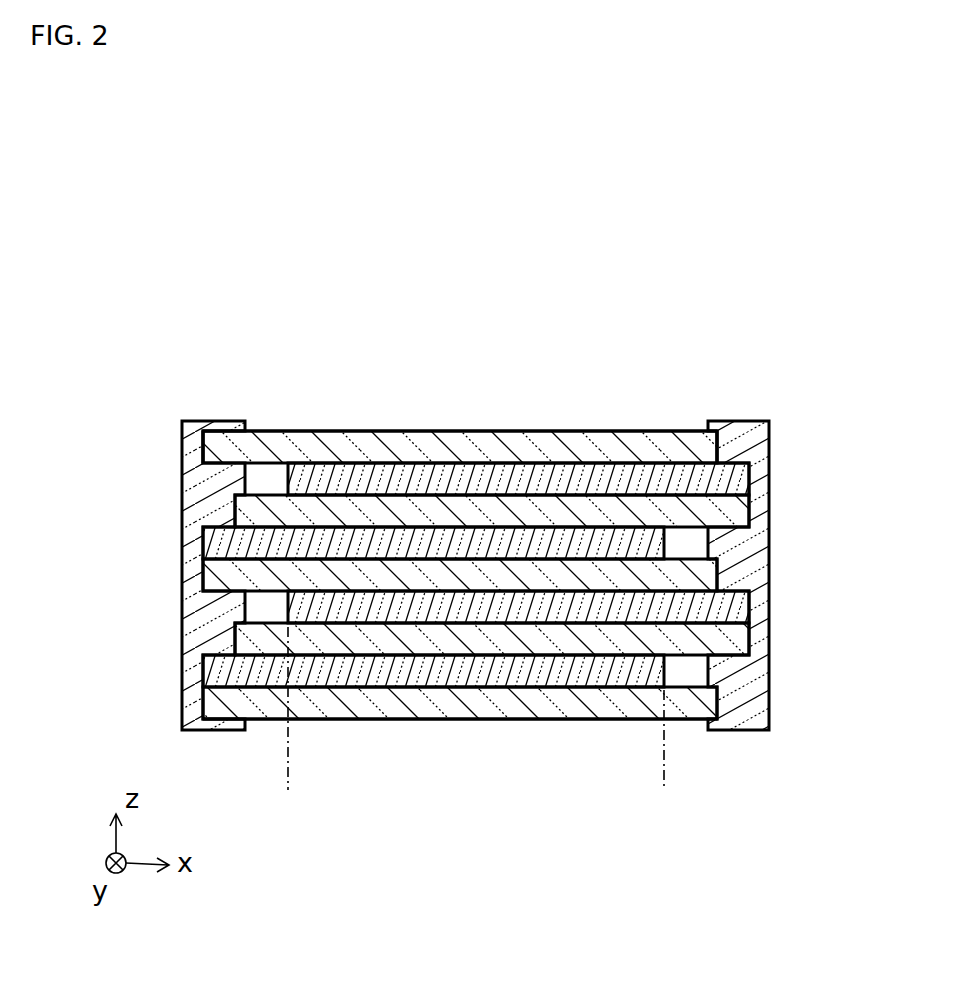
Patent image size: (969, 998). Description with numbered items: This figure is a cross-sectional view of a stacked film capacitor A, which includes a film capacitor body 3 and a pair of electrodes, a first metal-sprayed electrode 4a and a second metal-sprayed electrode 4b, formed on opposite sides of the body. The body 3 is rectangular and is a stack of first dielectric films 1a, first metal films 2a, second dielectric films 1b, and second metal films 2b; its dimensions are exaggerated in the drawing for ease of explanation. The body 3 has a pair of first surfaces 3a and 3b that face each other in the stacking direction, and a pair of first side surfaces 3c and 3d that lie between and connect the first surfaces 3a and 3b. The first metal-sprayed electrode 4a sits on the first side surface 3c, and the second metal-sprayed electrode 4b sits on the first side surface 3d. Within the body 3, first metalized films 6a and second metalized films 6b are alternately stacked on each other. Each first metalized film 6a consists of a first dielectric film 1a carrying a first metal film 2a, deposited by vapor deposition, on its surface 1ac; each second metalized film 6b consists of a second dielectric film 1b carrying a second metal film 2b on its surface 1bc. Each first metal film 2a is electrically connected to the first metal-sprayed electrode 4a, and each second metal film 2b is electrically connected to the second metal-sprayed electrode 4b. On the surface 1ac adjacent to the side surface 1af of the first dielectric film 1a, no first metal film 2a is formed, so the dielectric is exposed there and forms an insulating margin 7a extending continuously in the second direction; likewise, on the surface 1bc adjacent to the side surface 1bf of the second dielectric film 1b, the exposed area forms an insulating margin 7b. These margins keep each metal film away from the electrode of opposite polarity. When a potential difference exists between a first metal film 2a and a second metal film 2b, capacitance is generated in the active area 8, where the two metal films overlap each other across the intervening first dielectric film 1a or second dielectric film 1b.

The stacked film capacitor A is at (717, 216).
The film capacitor body 3 is at (476, 460).
The first surface 3a is at (294, 416).
The first surface 3b is at (684, 738).
The first side surface 3c is at (214, 385).
The first side surface 3d is at (755, 386).
The first metalized film 6a is at (460, 492).
The second metalized film 6b is at (492, 460).
The first dielectric film 1a is at (445, 692).
The second dielectric film 1b is at (538, 643).
The first metal film 2a is at (362, 675).
The second metal film 2b is at (633, 612).
The first metal-sprayed electrode 4a is at (190, 473).
The second metal-sprayed electrode 4b is at (752, 437).
The insulating margin 7a is at (680, 557).
The insulating margin 7b is at (267, 495).
The surface 1ac is at (247, 557).
The side surface 1af is at (720, 573).
The surface 1bc is at (722, 620).
The side surface 1bf is at (233, 507).
The active area 8 is at (664, 790).